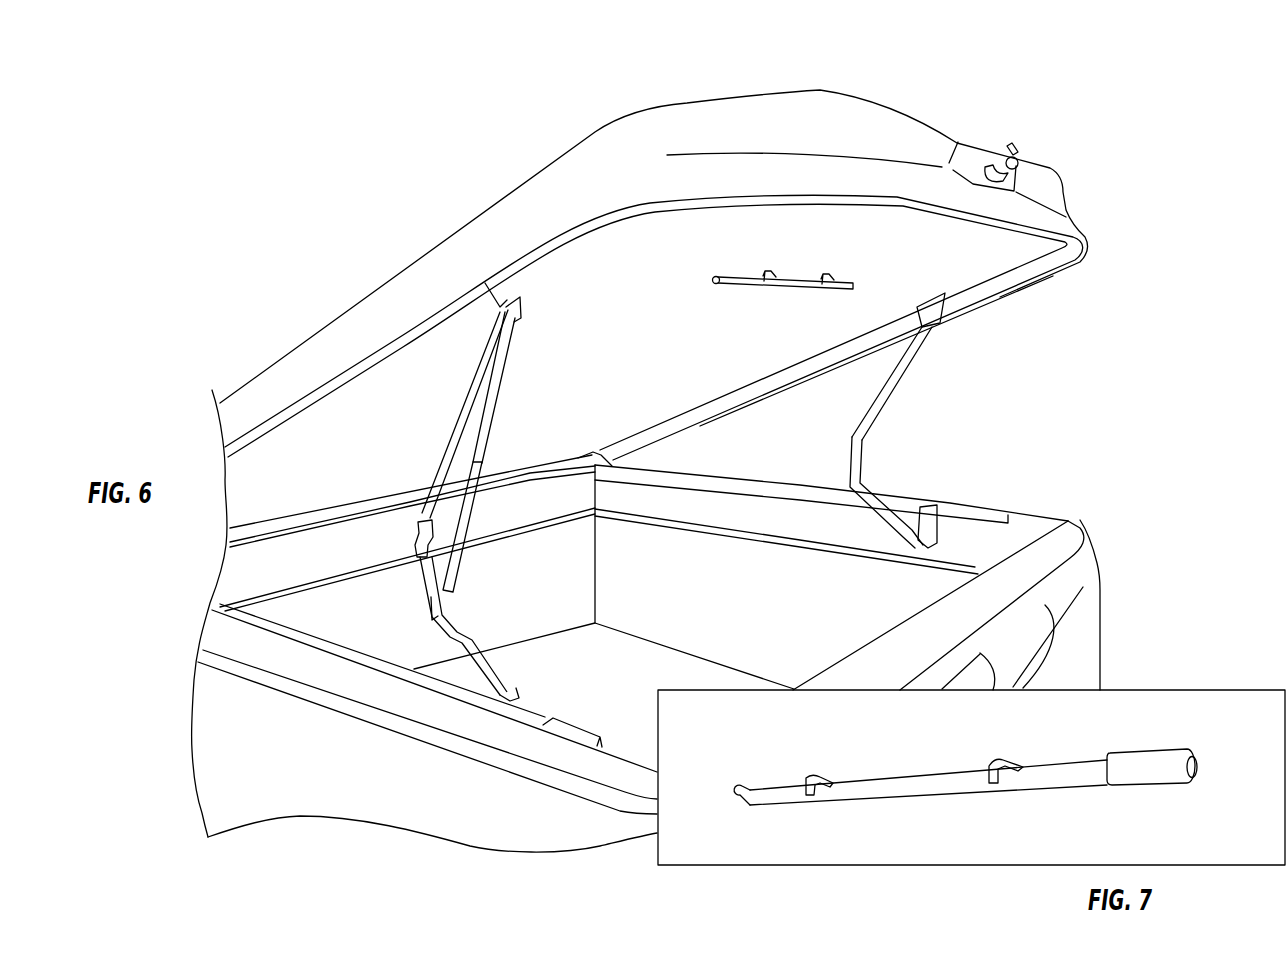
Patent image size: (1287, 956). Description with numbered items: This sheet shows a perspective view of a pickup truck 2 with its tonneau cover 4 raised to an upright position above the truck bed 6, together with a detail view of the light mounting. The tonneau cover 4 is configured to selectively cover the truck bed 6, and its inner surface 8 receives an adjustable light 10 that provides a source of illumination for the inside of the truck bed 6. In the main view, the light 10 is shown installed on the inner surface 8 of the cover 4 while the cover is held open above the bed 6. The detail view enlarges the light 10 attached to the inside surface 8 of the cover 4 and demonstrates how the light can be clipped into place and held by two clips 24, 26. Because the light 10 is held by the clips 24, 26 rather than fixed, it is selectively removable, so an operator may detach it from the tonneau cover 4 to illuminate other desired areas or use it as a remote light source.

In FIG. 6, the pickup truck 2 is at (176, 734).
In FIG. 6, the tonneau cover 4 is at (654, 269).
In FIG. 6, the truck bed 6 is at (997, 538).
In FIG. 6, the inner surface 8 is at (960, 265).
In FIG. 7, the inner surface 8 is at (1190, 707).
In FIG. 6, the adjustable light 10 is at (738, 289).
In FIG. 7, the adjustable light 10 is at (965, 784).
In FIG. 7, the clip 24 is at (818, 773).
In FIG. 7, the clip 26 is at (998, 758).